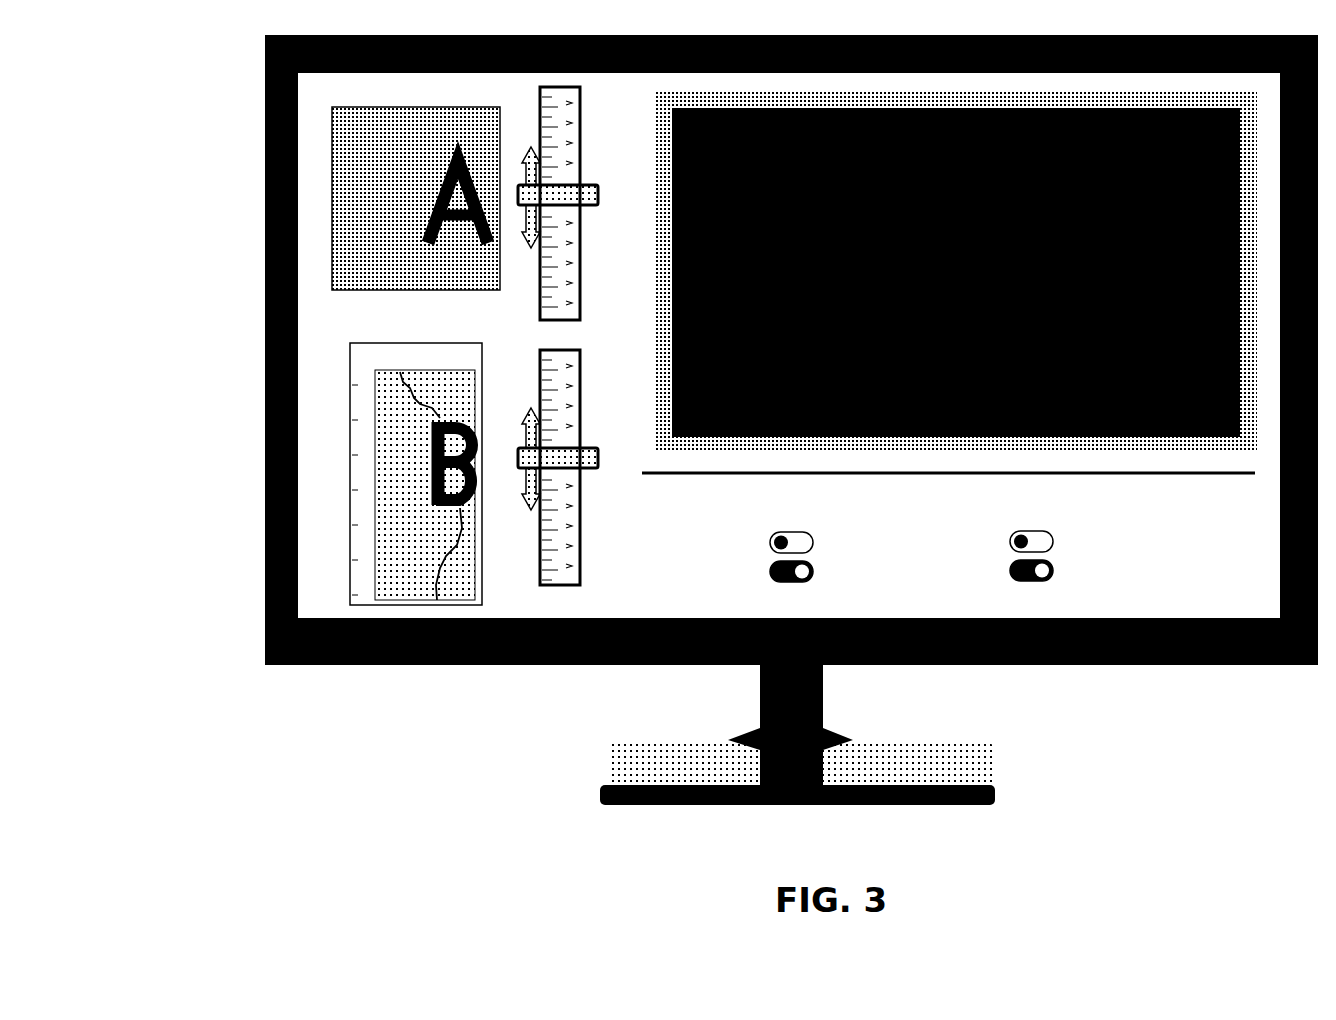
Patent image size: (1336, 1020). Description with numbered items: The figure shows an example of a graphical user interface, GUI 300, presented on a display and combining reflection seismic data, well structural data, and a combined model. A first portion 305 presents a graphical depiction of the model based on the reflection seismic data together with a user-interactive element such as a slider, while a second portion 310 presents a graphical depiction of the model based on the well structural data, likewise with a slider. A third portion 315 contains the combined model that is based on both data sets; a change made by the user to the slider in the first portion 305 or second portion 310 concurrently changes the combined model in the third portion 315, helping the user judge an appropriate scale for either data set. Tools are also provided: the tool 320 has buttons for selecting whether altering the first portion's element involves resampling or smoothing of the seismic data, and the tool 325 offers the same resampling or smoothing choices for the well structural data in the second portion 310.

The graphical user interface 300 is at (420, 742).
The first portion 305 is at (318, 217).
The second portion 310 is at (330, 505).
The third portion 315 is at (1234, 508).
The tool 320 is at (901, 590).
The tool 325 is at (1126, 588).